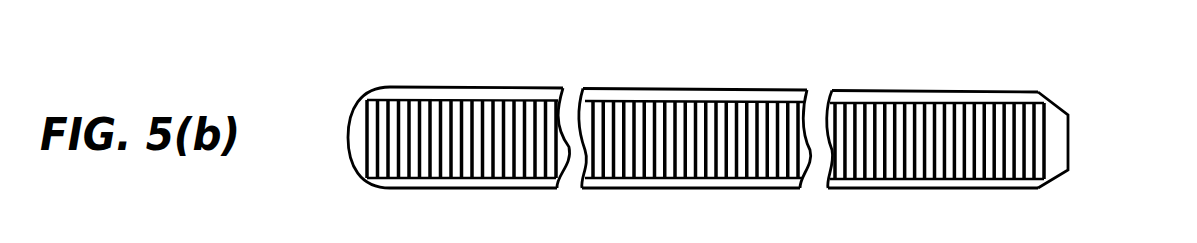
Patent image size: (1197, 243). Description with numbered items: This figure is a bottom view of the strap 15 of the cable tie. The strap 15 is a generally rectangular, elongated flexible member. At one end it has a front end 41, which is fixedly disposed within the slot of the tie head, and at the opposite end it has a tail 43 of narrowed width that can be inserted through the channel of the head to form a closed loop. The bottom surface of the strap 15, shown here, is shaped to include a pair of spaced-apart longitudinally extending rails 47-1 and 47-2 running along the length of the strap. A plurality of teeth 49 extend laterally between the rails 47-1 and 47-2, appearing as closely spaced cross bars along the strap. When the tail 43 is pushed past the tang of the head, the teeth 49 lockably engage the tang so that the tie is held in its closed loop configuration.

The strap 15 is at (967, 73).
The front end 41 is at (1068, 141).
The tail 43 is at (349, 140).
The longitudinally extending rail 47-1 is at (742, 90).
The longitudinally extending rail 47-2 is at (900, 190).
The teeth 49 is at (482, 133).